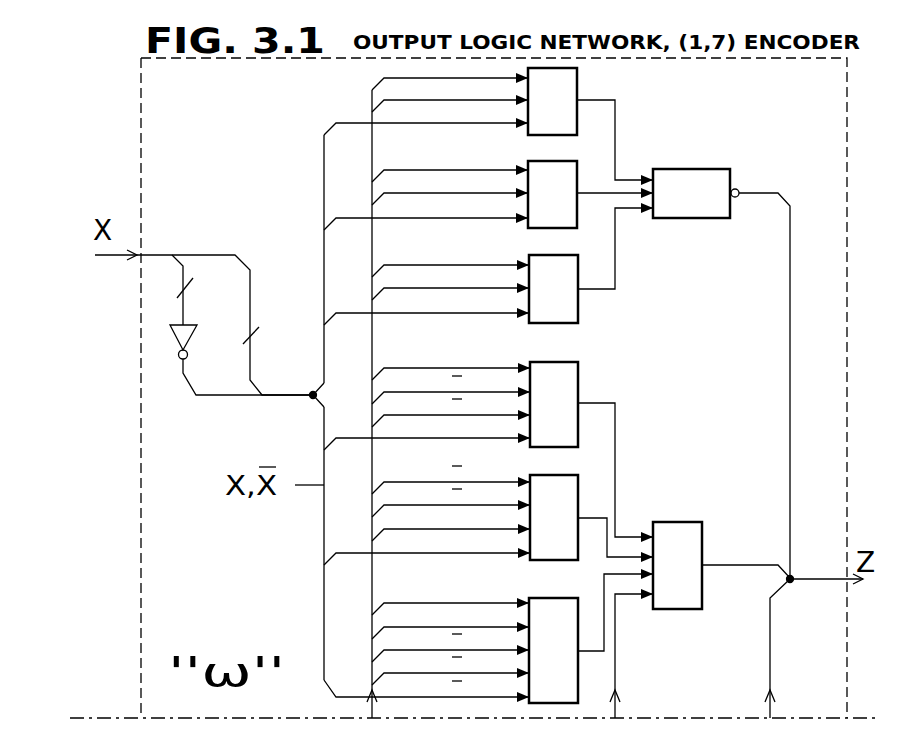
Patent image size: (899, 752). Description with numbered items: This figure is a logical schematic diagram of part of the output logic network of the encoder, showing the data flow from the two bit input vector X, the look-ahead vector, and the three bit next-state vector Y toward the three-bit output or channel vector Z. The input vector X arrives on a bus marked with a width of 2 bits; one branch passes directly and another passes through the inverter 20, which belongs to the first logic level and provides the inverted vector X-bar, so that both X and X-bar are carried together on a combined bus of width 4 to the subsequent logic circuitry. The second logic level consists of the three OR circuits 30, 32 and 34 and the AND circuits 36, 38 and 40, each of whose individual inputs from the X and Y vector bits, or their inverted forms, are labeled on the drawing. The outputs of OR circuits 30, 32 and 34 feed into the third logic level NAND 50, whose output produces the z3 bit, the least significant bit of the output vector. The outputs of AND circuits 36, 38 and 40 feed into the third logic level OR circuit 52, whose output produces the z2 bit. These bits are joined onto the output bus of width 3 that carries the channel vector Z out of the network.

The inverter 20 is at (197, 326).
The OR circuit 30 is at (580, 88).
The OR circuit 32 is at (580, 180).
The OR circuit 34 is at (580, 273).
The AND circuit 36 is at (580, 378).
The AND circuit 38 is at (580, 490).
The AND circuit 40 is at (570, 607).
The NAND circuit 50 is at (712, 169).
The OR circuit 52 is at (700, 527).
The 2-bit bus 2 is at (126, 247).
The 4-bit bus 4 is at (293, 387).
The 3-bit output bus 3 is at (828, 568).